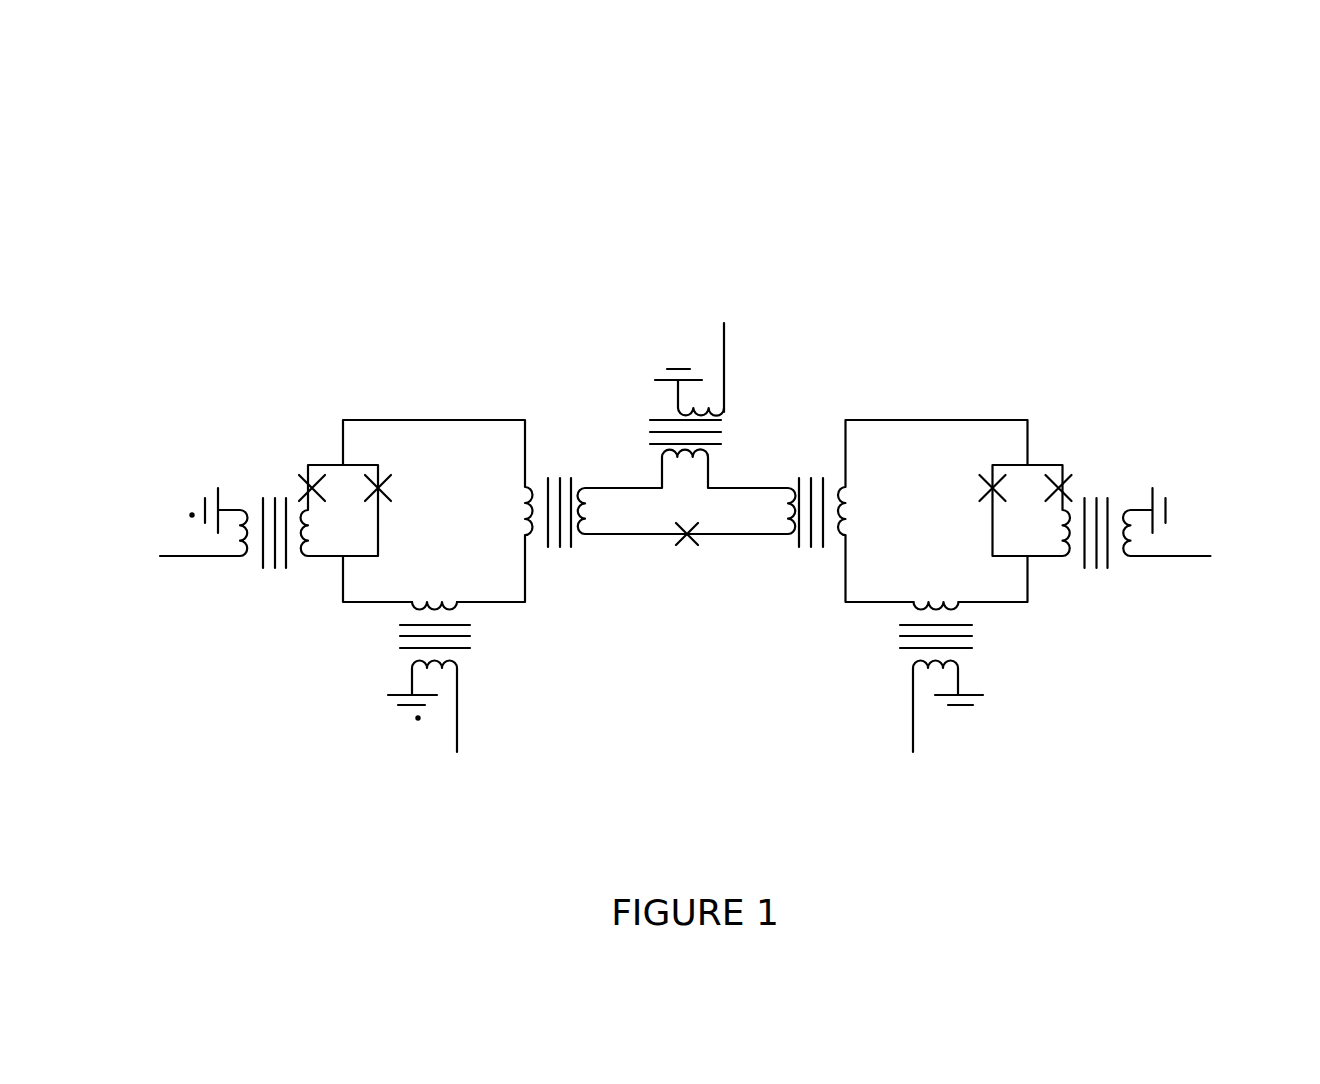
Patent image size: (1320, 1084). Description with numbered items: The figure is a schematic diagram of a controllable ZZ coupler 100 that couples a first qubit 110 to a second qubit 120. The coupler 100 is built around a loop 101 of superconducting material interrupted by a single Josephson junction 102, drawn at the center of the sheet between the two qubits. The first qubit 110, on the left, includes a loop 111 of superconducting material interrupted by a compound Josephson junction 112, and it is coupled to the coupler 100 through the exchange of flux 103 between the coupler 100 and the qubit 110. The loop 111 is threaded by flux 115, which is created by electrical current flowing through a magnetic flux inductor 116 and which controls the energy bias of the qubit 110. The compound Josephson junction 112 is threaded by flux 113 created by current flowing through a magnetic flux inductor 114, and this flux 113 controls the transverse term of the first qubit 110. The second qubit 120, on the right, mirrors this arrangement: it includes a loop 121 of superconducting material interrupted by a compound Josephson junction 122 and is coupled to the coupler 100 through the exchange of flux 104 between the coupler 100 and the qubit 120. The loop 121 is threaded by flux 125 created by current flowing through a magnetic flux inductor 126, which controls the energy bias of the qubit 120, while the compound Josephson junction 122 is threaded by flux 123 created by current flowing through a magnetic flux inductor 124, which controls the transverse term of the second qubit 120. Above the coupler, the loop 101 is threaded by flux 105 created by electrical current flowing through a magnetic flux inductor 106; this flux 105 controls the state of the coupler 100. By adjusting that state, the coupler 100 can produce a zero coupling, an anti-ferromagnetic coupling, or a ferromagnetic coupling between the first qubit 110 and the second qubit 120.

The controllable ZZ coupler 100 is at (617, 463).
The loop 101 is at (651, 537).
The Josephson junction 102 is at (698, 537).
The flux 103 is at (562, 477).
The flux 104 is at (812, 478).
The flux 105 is at (722, 418).
The magnetic flux inductor 106 is at (685, 360).
The first qubit 110 is at (345, 630).
The loop 111 is at (447, 420).
The compound Josephson junction 112 is at (332, 463).
The flux 113 is at (277, 498).
The magnetic flux inductor 114 is at (220, 558).
The flux 115 is at (402, 650).
The magnetic flux inductor 116 is at (438, 718).
The second qubit 120 is at (1028, 630).
The loop 121 is at (925, 420).
The compound Josephson junction 122 is at (1040, 465).
The flux 123 is at (1097, 498).
The magnetic flux inductor 124 is at (1155, 560).
The flux 125 is at (973, 650).
The magnetic flux inductor 126 is at (937, 718).